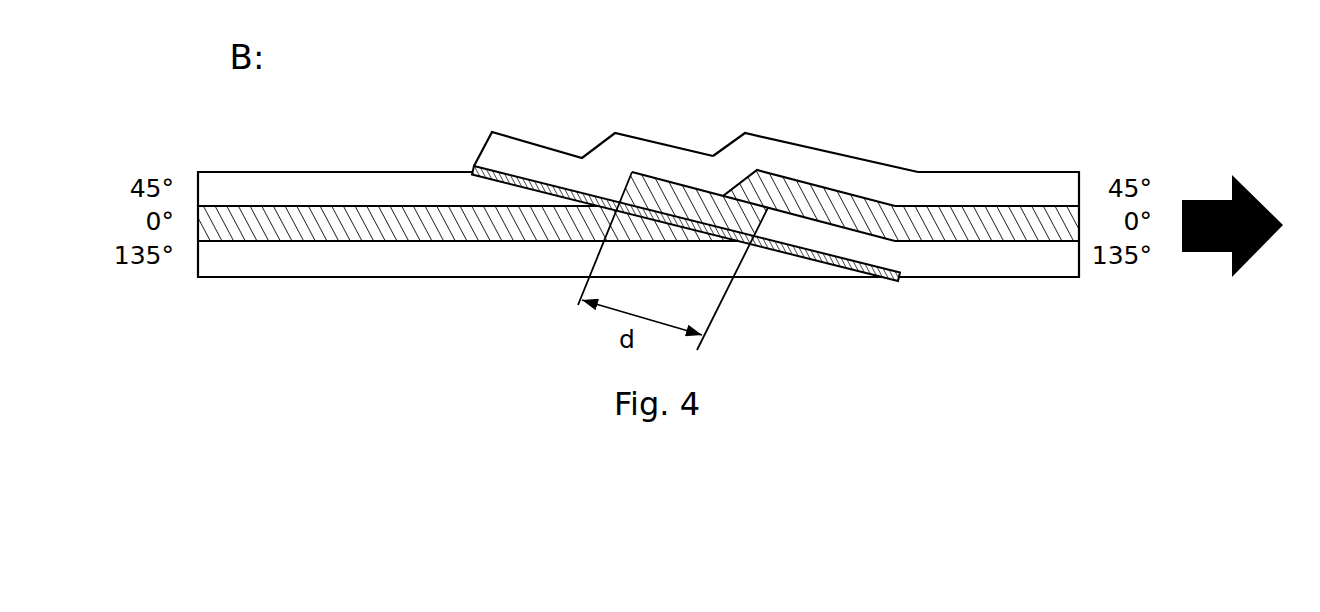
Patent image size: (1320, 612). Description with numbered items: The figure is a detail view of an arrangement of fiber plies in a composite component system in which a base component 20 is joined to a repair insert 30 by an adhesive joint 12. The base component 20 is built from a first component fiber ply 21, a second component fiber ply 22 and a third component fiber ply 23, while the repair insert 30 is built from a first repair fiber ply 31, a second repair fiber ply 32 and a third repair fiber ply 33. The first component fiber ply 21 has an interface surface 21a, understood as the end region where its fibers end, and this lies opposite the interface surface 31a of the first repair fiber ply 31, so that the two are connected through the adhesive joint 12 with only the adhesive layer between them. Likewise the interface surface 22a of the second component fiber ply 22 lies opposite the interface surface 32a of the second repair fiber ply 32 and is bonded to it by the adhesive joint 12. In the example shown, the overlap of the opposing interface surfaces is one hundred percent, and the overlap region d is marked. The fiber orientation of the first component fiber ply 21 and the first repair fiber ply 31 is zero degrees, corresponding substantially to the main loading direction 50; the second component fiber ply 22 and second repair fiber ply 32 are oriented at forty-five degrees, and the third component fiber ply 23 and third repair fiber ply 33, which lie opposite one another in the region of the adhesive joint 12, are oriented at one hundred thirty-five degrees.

The adhesive joint 12 is at (808, 255).
The base component 20 is at (546, 200).
The first component fiber ply 21 is at (258, 210).
The interface surface 21a is at (763, 163).
The second component fiber ply 22 is at (363, 183).
The interface surface 22a is at (548, 183).
The third component fiber ply 23 is at (292, 262).
The repair insert 30 is at (769, 193).
The first repair fiber ply 31 is at (965, 207).
The interface surface 31a is at (625, 213).
The second repair fiber ply 32 is at (1043, 183).
The interface surface 32a is at (663, 239).
The third repair fiber ply 33 is at (1037, 262).
The main loading direction 50 is at (1197, 200).